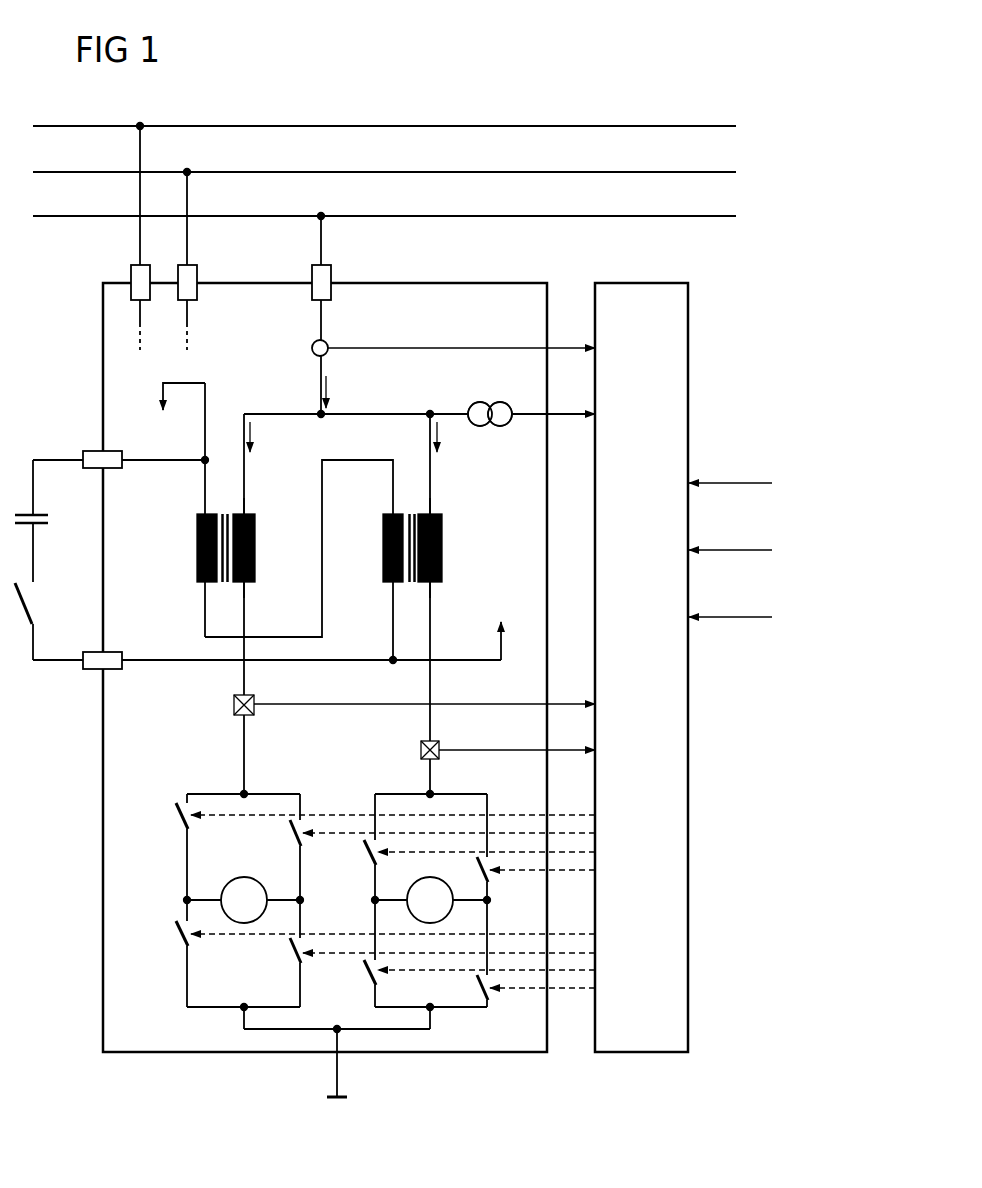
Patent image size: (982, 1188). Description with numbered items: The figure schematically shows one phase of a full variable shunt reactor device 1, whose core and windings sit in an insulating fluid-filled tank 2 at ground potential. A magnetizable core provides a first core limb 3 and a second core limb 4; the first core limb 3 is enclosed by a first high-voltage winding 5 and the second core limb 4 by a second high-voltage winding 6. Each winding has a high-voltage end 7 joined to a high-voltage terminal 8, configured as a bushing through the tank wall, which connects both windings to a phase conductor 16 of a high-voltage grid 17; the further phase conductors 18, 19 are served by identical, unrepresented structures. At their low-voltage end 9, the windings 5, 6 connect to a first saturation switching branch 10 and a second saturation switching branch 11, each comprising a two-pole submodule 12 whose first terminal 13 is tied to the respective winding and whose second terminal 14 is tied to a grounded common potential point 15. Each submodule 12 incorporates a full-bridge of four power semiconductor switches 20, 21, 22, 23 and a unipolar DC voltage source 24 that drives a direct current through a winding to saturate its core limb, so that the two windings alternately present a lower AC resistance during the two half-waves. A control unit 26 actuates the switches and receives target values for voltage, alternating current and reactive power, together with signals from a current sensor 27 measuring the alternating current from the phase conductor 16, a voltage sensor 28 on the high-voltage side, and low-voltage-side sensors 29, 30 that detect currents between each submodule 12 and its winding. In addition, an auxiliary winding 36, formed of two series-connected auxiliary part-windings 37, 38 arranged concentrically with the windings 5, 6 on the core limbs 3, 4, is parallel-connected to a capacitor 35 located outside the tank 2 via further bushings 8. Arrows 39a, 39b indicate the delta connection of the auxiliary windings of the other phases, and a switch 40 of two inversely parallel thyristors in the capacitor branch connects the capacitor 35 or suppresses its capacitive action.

The device 1 is at (70, 350).
The tank 2 is at (103, 860).
The first core limb 3 is at (222, 583).
The second core limb 4 is at (410, 583).
The first high-voltage winding 5 is at (256, 552).
The second high-voltage winding 6 is at (443, 552).
The high-voltage end 7 is at (245, 514).
The high-voltage terminal 8 is at (131, 280).
The low-voltage end 9 is at (245, 582).
The first saturation switching branch 10 is at (183, 788).
The second saturation switching branch 11 is at (373, 788).
The two-pole submodule 12 is at (190, 1013).
The first terminal 13 is at (244, 778).
The second terminal 14 is at (370, 1031).
The common potential point 15 is at (336, 1093).
The phase conductor 16 is at (597, 216).
The high-voltage grid 17 is at (288, 114).
The phase conductor 18 is at (625, 172).
The phase conductor 19 is at (650, 127).
The power semiconductor switch 20 is at (188, 830).
The power semiconductor switch 21 is at (188, 947).
The power semiconductor switch 22 is at (301, 847).
The power semiconductor switch 23 is at (301, 964).
The DC voltage source 24 is at (221, 889).
The control unit 26 is at (688, 858).
The current sensor 27 is at (312, 347).
The voltage sensor 28 is at (507, 403).
The sensor 29 is at (234, 703).
The sensor 30 is at (421, 749).
The capacitor 35 is at (44, 526).
The auxiliary winding 36 is at (187, 446).
The auxiliary part-winding 37 is at (197, 552).
The auxiliary part-winding 38 is at (383, 552).
The arrow 39a is at (189, 383).
The arrow 39b is at (501, 646).
The switch 40 is at (33, 605).